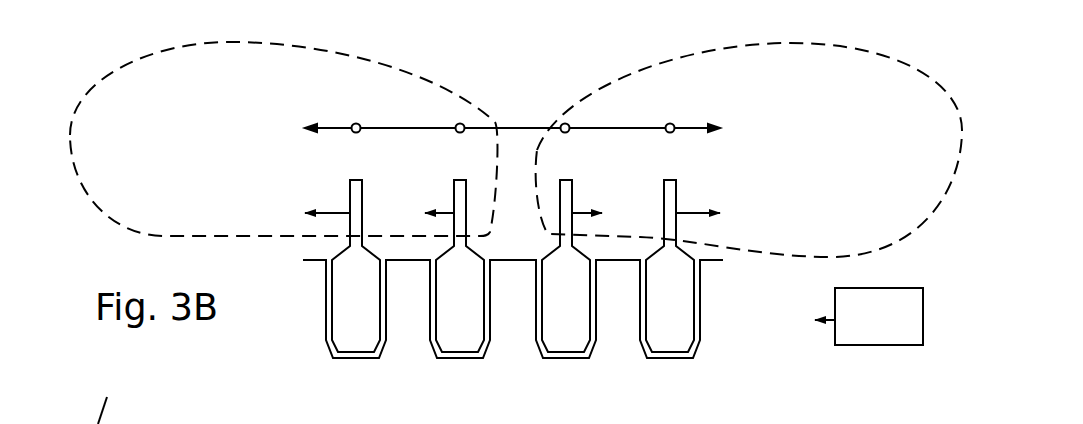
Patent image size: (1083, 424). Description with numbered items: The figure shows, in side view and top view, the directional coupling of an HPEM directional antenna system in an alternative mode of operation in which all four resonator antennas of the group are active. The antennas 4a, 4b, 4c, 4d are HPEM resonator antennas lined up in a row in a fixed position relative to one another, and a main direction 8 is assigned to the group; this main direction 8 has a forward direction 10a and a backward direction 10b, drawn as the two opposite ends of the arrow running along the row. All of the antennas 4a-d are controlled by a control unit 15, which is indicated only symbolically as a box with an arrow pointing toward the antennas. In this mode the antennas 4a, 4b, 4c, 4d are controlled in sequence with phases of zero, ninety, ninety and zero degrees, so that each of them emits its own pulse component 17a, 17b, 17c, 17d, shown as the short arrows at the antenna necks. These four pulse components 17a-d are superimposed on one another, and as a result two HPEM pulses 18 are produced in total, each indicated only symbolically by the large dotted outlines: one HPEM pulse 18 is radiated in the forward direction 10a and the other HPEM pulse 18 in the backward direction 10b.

The HPEM pulse 18 is at (237, 42).
The main direction 8 is at (437, 128).
The forward direction 10a is at (680, 128).
The backward direction 10b is at (332, 128).
The antenna 4a is at (363, 203).
The antenna 4b is at (467, 203).
The antenna 4c is at (571, 203).
The antenna 4d is at (675, 203).
The pulse component 17a is at (326, 215).
The pulse component 17b is at (442, 218).
The pulse component 17c is at (587, 215).
The pulse component 17d is at (698, 215).
The control unit 15 is at (880, 345).